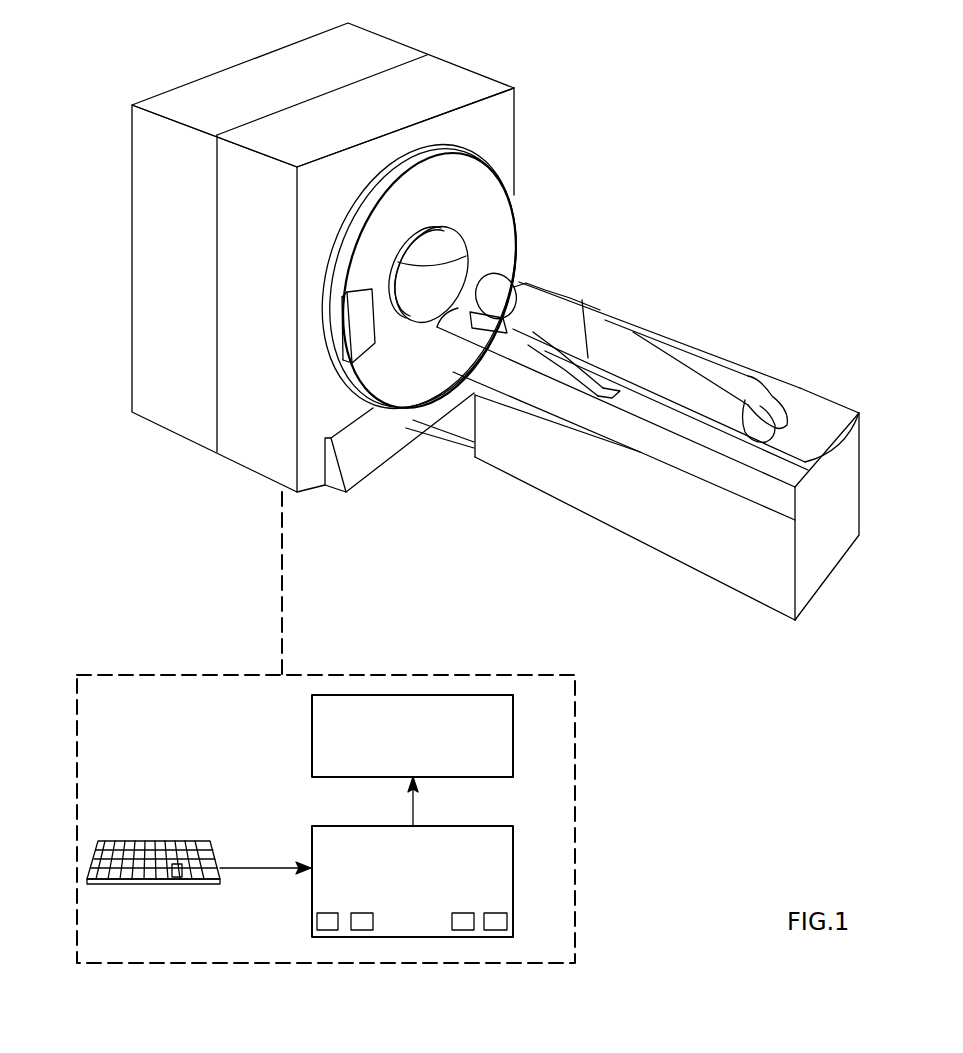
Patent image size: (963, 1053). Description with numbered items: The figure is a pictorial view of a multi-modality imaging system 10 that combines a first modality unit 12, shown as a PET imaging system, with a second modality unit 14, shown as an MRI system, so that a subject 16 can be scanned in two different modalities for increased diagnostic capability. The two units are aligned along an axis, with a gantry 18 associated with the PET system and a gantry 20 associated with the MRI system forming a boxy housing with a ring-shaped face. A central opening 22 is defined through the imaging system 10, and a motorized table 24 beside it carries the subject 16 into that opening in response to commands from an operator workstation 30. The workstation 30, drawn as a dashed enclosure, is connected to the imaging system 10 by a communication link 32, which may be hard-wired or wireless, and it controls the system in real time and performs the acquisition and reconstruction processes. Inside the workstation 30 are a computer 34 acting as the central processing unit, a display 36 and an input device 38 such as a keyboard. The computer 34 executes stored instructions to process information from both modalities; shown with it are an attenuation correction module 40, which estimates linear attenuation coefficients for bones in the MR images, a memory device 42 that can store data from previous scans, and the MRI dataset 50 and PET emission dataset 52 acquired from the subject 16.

The multi-modality imaging system 10 is at (813, 87).
The first modality unit 12 is at (248, 461).
The second modality unit 14 is at (175, 425).
The subject 16 is at (590, 308).
The gantry 18 is at (505, 115).
The gantry 20 is at (233, 82).
The central opening 22 is at (461, 248).
The motorized table 24 is at (607, 505).
The operator workstation 30 is at (77, 675).
The communication link 32 is at (288, 542).
The computer 34 is at (311, 832).
The display 36 is at (311, 737).
The input device 38 is at (148, 841).
The attenuation correction module 40 is at (507, 931).
The memory device 42 is at (364, 931).
The MRI dataset 50 is at (326, 931).
The PET emission dataset 52 is at (463, 931).